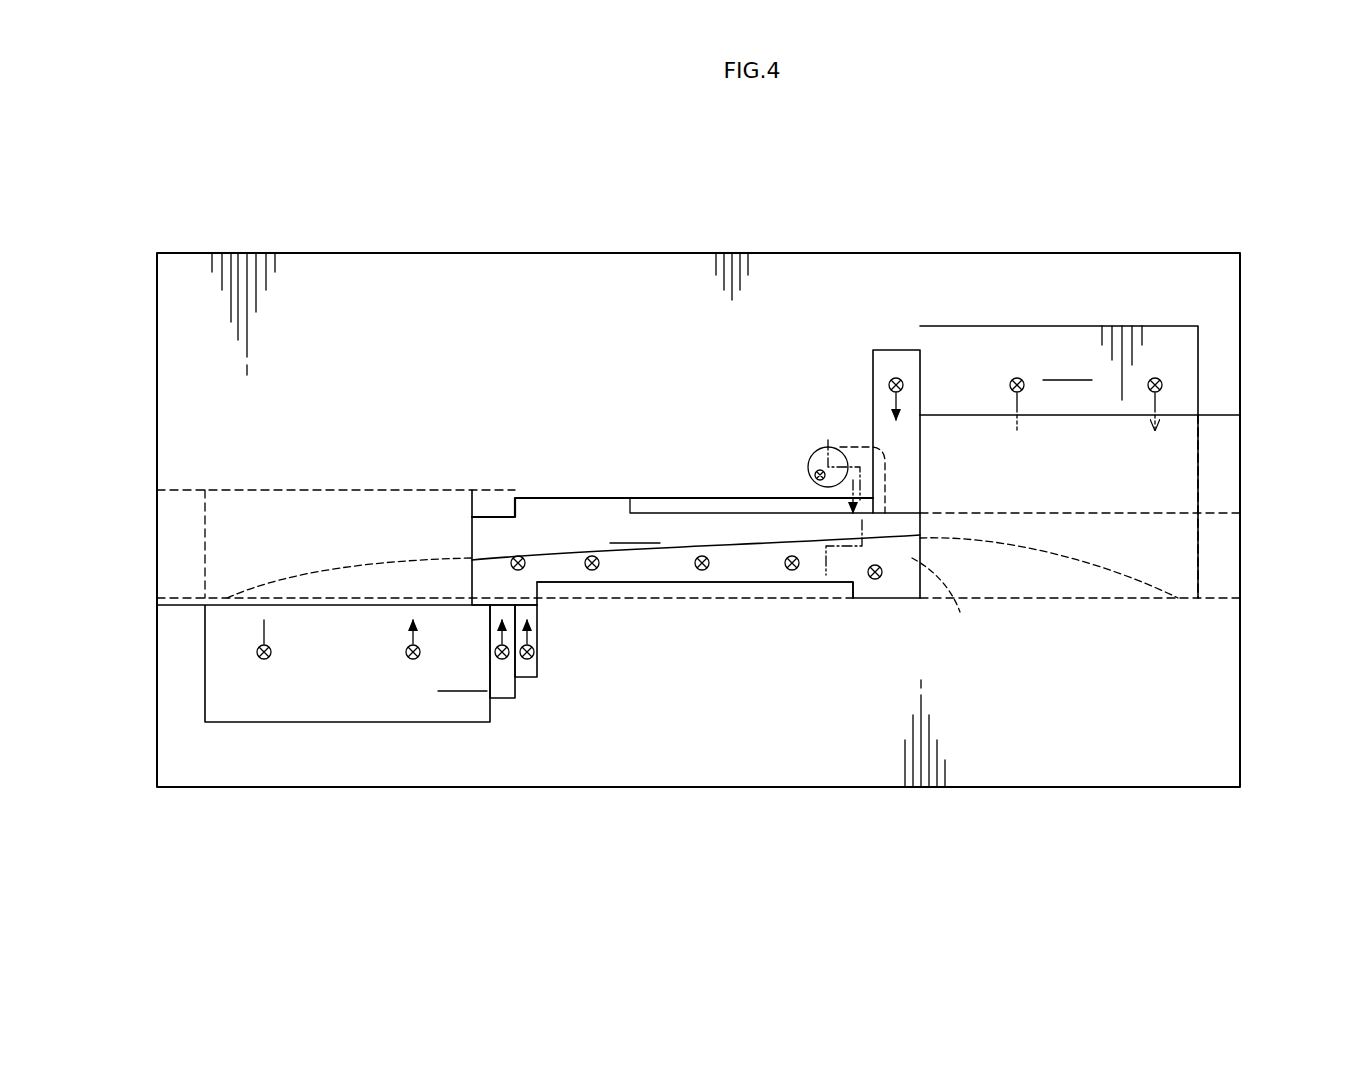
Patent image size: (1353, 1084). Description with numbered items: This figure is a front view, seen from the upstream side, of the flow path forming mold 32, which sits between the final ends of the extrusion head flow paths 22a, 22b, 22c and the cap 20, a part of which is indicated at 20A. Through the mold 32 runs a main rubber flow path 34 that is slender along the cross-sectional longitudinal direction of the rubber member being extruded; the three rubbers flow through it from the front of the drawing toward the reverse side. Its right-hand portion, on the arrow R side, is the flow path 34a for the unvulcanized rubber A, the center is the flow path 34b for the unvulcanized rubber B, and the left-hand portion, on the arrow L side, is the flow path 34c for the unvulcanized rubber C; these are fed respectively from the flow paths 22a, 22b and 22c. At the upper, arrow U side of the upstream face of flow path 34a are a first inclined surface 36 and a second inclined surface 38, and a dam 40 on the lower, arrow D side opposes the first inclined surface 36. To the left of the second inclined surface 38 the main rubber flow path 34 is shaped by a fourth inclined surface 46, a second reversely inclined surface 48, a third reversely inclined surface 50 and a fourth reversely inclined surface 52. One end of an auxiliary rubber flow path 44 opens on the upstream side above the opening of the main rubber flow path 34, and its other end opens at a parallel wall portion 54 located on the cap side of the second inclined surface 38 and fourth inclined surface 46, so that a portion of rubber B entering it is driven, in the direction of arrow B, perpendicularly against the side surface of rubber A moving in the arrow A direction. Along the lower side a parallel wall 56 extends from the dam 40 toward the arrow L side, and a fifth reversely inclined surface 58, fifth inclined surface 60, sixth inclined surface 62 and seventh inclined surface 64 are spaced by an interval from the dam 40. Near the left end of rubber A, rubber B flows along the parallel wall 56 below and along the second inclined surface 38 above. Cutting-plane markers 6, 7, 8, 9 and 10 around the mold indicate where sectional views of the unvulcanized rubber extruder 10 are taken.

The flow path forming mold 32 is at (1185, 252).
The first inclined surface 36 is at (1016, 340).
The second inclined surface 38 is at (897, 362).
The dam 40 is at (1162, 450).
The main rubber flow path 34 is at (560, 522).
The flow path 34a is at (1028, 572).
The flow path 34b is at (640, 568).
The flow path 34c is at (335, 580).
The third reversely inclined surface 50 is at (497, 500).
The fourth reversely inclined surface 52 is at (327, 517).
The second reversely inclined surface 48 is at (583, 492).
The air flow path 20A is at (690, 556).
The parallel wall portion 54 is at (722, 522).
The fourth inclined surface 46 is at (748, 500).
The auxiliary rubber flow path 44 is at (818, 450).
The parallel wall 56 is at (888, 588).
The fifth reversely inclined surface 58 is at (779, 590).
The cap 20 is at (218, 562).
The fifth inclined surface 60 is at (527, 672).
The sixth inclined surface 62 is at (506, 692).
The seventh inclined surface 64 is at (420, 705).
The flow path 22a is at (1198, 130).
The flow path 22b is at (920, 167).
The flow path 22c is at (535, 142).
The unvulcanized rubber extruder 10 is at (290, 235).
The section line 9 is at (585, 235).
The section line 8 is at (830, 238).
The section line 7 is at (902, 232).
The section line 6 is at (1072, 235).
The unvulcanized rubber A is at (860, 558).
The unvulcanized rubber B is at (850, 512).
The unvulcanized rubber C is at (392, 578).
The arrow U direction U is at (1315, 420).
The arrow D direction D is at (1315, 548).
The arrow L direction L is at (560, 930).
The arrow R direction R is at (805, 930).